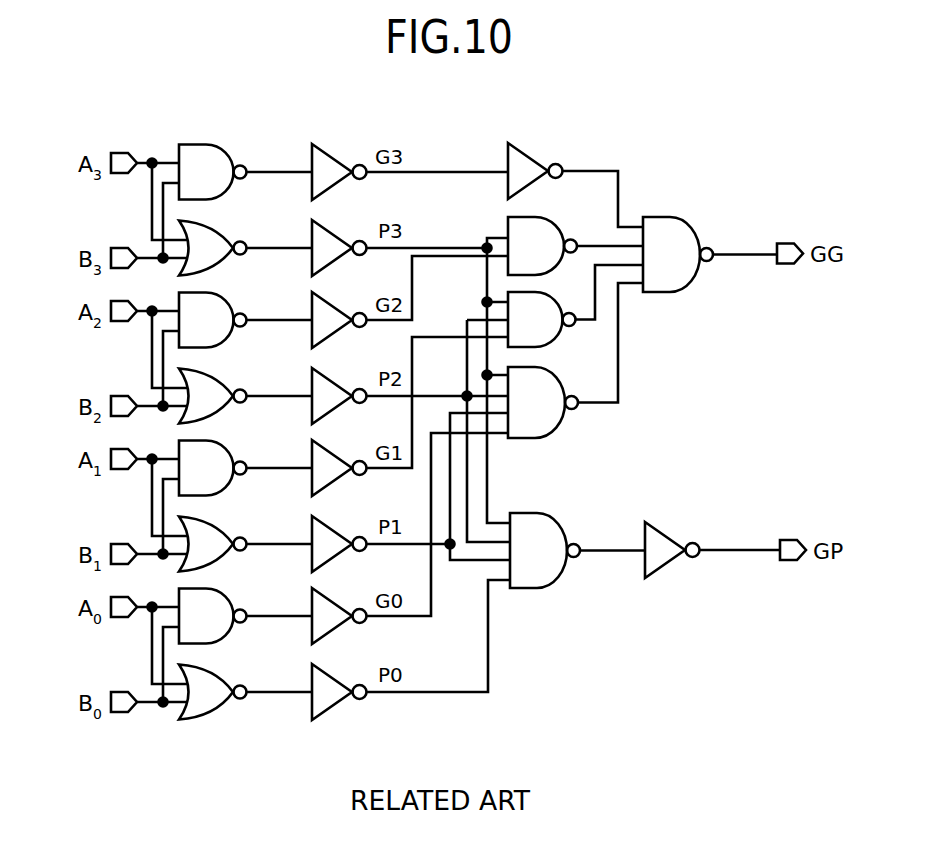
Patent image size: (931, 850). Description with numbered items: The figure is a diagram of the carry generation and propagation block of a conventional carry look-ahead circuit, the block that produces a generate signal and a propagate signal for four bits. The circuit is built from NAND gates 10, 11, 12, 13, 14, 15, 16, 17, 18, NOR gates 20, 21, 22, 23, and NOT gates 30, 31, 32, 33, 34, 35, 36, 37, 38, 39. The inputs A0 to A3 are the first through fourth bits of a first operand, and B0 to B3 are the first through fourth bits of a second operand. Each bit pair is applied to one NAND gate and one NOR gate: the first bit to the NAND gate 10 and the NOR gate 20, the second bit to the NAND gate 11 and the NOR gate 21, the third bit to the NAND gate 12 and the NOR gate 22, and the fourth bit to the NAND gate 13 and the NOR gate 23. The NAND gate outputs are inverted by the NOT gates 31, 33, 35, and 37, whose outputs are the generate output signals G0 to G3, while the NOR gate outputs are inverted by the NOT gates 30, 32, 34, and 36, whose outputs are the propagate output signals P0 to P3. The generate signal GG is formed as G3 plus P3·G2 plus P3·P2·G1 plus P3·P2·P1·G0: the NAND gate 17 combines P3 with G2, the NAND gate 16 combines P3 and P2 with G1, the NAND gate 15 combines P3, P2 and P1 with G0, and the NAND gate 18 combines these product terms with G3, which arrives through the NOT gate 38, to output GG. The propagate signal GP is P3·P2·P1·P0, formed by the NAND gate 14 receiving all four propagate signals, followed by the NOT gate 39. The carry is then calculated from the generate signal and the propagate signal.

The NAND gate 10 is at (222, 591).
The NAND gate 11 is at (222, 443).
The NAND gate 12 is at (222, 295).
The NAND gate 13 is at (222, 147).
The NAND gate 14 is at (555, 521).
The NAND gate 15 is at (553, 371).
The NAND gate 16 is at (553, 296).
The NAND gate 17 is at (553, 221).
The NAND gate 18 is at (690, 221).
The NOR gate 20 is at (214, 669).
The NOR gate 21 is at (214, 521).
The NOR gate 22 is at (214, 373).
The NOR gate 23 is at (214, 225).
The NOT gate 30 is at (335, 671).
The NOT gate 31 is at (335, 596).
The NOT gate 32 is at (335, 523).
The NOT gate 33 is at (335, 448).
The NOT gate 34 is at (335, 375).
The NOT gate 35 is at (335, 300).
The NOT gate 36 is at (335, 227).
The NOT gate 37 is at (335, 152).
The NOT gate 38 is at (531, 150).
The NOT gate 39 is at (665, 530).